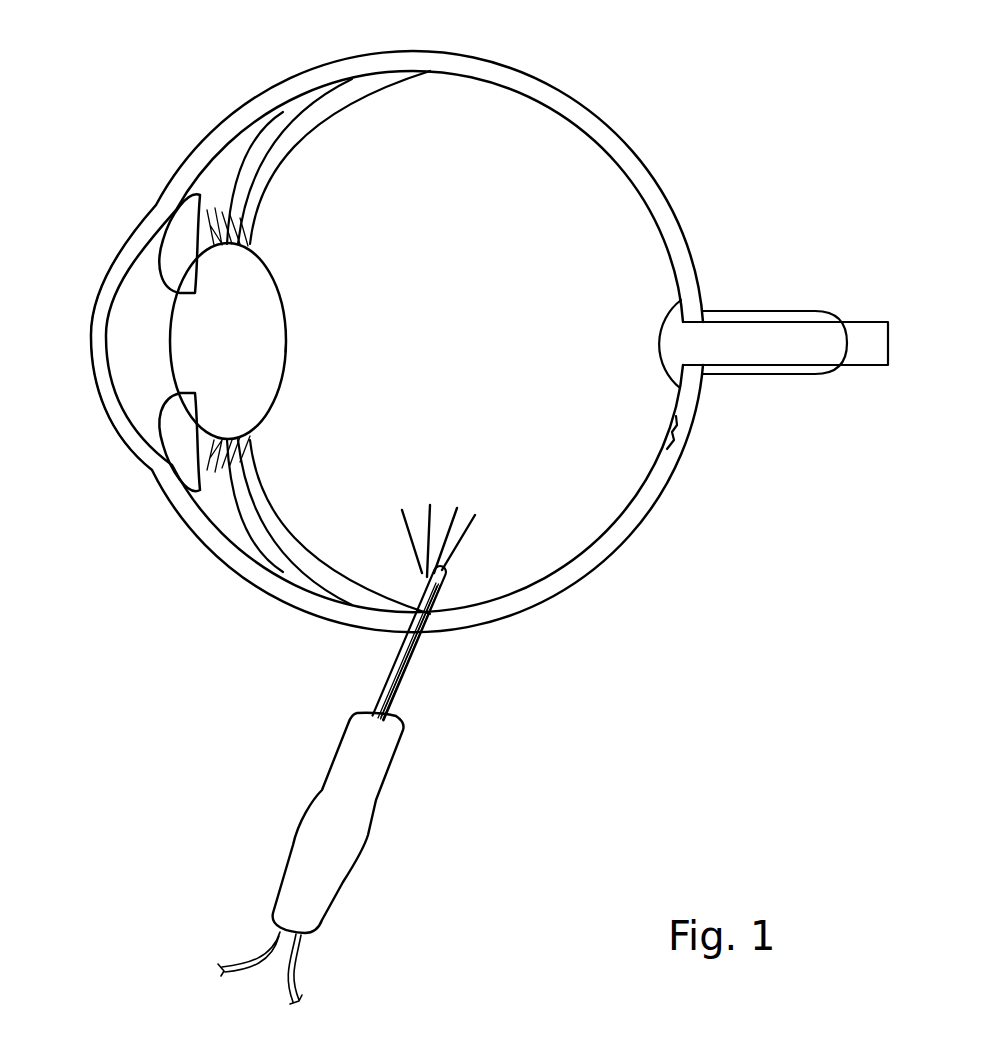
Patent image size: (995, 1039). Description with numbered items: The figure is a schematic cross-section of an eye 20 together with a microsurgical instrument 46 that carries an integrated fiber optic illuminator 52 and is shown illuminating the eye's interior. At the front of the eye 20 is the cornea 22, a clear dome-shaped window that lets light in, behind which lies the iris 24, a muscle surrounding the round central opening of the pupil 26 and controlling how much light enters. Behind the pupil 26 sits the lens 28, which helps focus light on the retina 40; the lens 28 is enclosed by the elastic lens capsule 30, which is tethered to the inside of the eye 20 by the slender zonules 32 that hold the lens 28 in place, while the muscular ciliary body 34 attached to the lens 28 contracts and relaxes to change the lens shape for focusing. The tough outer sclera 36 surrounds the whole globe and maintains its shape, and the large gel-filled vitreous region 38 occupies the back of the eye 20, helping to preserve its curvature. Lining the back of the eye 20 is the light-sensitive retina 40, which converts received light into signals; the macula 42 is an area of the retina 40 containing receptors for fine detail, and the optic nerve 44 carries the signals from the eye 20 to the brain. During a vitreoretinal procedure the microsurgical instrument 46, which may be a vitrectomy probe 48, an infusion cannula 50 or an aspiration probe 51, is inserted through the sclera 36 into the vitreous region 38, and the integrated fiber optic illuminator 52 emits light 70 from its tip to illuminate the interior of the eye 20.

The eye 20 is at (710, 103).
The cornea 22 is at (99, 290).
The iris 24 is at (165, 440).
The pupil 26 is at (162, 341).
The lens 28 is at (262, 290).
The lens capsule 30 is at (288, 342).
The zonules 32 is at (232, 232).
The ciliary body 34 is at (222, 487).
The sclera 36 is at (516, 69).
The vitreous region 38 is at (498, 252).
The retina 40 is at (647, 488).
The macula 42 is at (676, 429).
The optic nerve 44 is at (752, 287).
The microsurgical instrument 46 is at (281, 798).
The vitrectomy probe 48 is at (418, 660).
The infusion cannula 50 is at (410, 651).
The aspiration probe 51 is at (409, 651).
The integrated fiber optic illuminator 52 is at (388, 663).
The light 70 is at (393, 477).